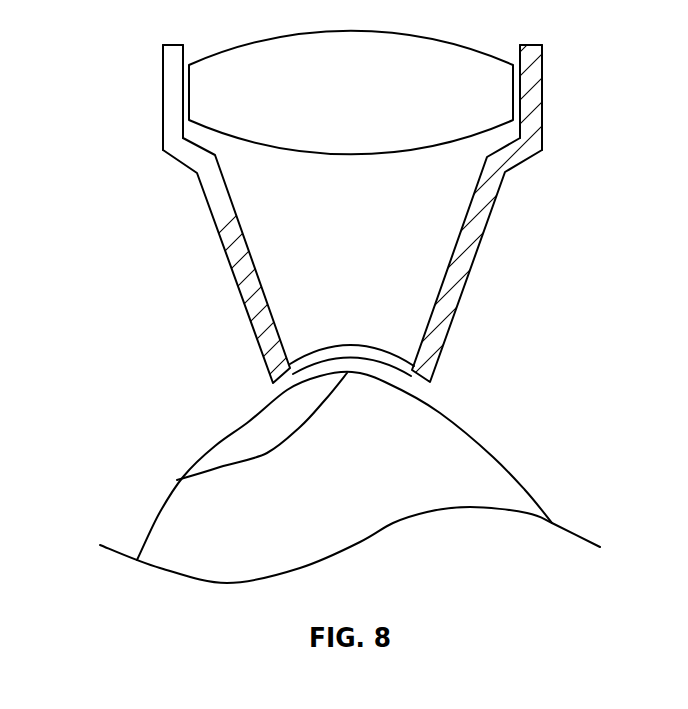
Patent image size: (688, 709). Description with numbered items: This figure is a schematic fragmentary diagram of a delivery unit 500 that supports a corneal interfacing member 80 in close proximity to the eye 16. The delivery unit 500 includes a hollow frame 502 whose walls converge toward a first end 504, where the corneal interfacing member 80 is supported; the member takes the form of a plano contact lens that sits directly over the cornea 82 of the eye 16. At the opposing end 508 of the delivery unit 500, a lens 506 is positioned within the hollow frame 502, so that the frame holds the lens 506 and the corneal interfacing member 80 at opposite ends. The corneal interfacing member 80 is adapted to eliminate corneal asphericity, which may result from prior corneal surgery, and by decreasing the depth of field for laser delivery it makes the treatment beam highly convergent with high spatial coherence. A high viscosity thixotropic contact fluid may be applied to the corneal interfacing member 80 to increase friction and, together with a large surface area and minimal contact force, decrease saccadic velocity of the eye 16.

The delivery unit 500 is at (358, 200).
The hollow frame 502 is at (492, 205).
The first end 504 is at (507, 318).
The lens 506 is at (268, 148).
The opposing end 508 is at (560, 64).
The corneal interfacing member 80 is at (345, 340).
The cornea 82 is at (178, 478).
The eye 16 is at (537, 453).